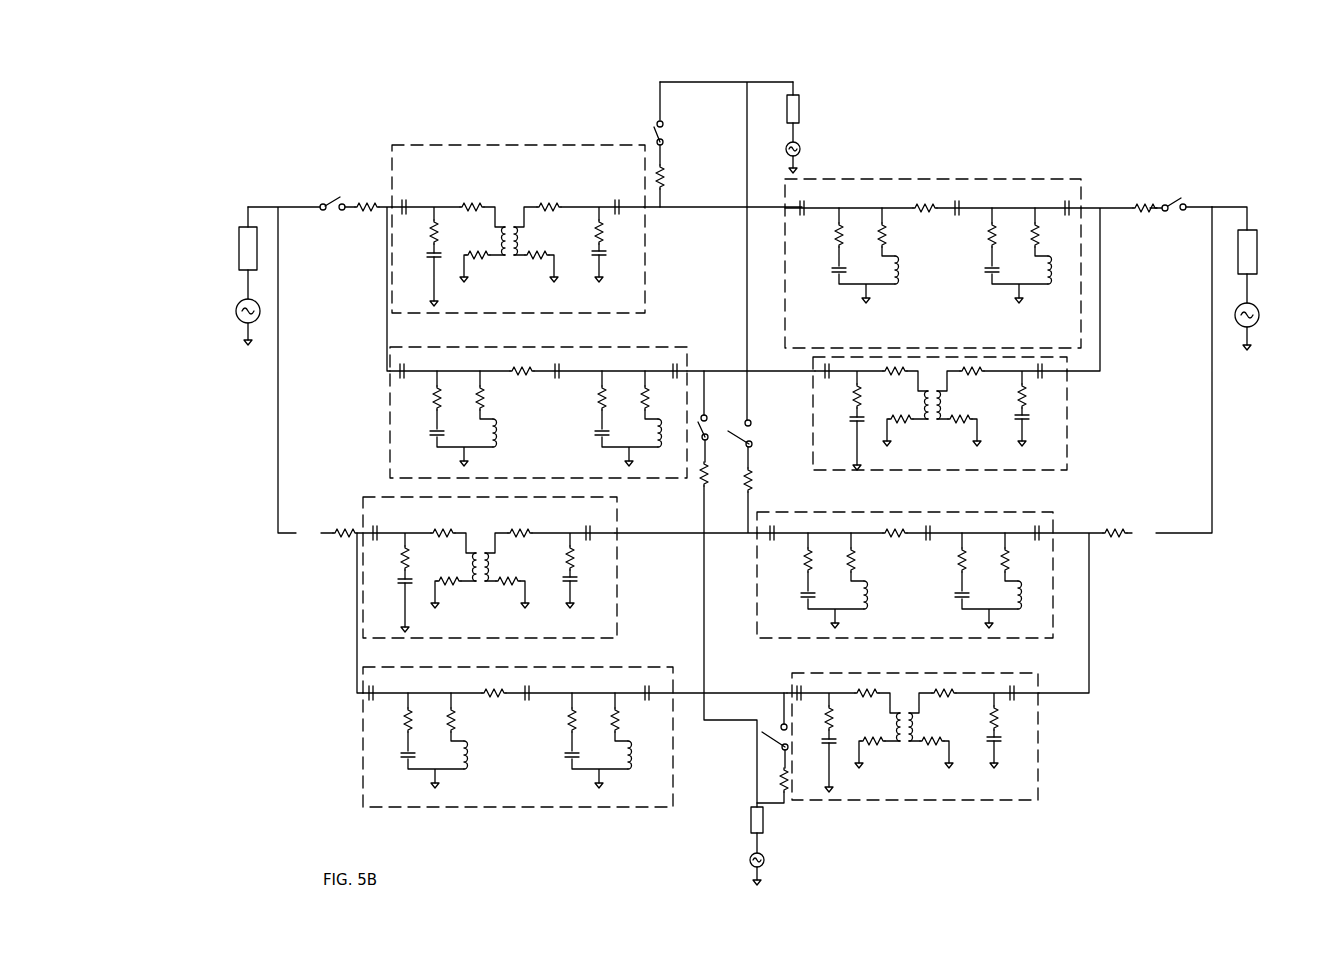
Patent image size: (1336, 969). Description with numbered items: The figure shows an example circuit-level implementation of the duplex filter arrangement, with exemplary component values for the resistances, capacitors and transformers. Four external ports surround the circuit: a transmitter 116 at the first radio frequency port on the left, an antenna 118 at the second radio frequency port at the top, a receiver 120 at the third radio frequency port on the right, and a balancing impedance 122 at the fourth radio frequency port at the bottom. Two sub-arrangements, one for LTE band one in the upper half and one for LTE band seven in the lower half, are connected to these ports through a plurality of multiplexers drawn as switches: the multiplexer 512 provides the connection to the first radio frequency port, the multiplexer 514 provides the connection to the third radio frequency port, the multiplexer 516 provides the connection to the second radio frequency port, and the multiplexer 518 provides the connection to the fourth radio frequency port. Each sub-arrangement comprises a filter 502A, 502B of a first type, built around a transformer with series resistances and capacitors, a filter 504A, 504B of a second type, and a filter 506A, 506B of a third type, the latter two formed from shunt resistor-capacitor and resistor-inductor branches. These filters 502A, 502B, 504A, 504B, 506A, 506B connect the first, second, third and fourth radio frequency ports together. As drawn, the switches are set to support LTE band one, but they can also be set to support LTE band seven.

The transmitter 116 is at (224, 198).
The antenna 118 is at (805, 88).
The receiver 120 is at (1265, 175).
The balancing impedance 122 is at (820, 867).
The multiplexer 512 is at (342, 198).
The multiplexer 514 is at (1165, 200).
The multiplexer 516 is at (652, 75).
The multiplexer 518 is at (750, 444).
The filter of a first type 502A is at (487, 145).
The filter of a first type 502B is at (617, 568).
The filter of a second type 504A is at (980, 180).
The filter of a second type 504B is at (1053, 597).
The filter of a third type 506A is at (390, 440).
The filter of a third type 506B is at (363, 778).